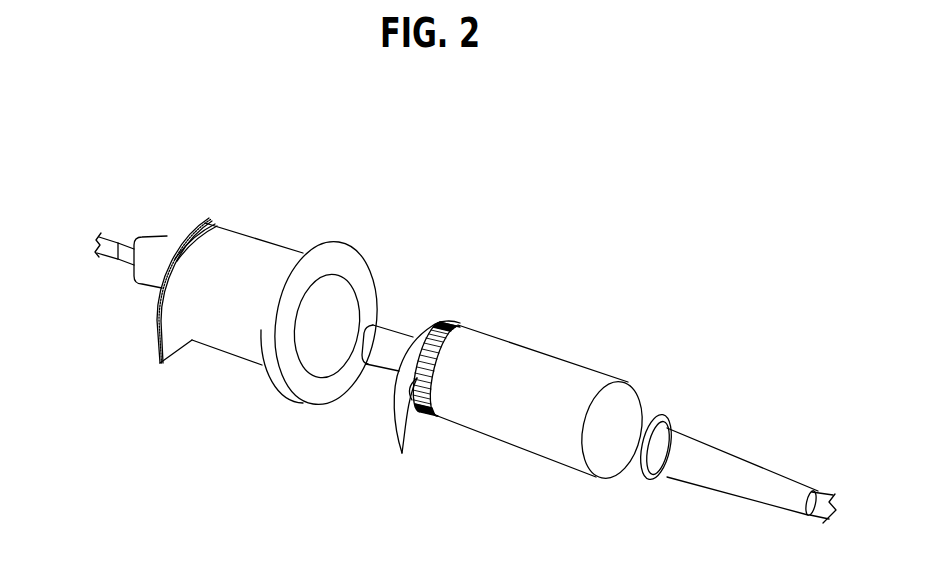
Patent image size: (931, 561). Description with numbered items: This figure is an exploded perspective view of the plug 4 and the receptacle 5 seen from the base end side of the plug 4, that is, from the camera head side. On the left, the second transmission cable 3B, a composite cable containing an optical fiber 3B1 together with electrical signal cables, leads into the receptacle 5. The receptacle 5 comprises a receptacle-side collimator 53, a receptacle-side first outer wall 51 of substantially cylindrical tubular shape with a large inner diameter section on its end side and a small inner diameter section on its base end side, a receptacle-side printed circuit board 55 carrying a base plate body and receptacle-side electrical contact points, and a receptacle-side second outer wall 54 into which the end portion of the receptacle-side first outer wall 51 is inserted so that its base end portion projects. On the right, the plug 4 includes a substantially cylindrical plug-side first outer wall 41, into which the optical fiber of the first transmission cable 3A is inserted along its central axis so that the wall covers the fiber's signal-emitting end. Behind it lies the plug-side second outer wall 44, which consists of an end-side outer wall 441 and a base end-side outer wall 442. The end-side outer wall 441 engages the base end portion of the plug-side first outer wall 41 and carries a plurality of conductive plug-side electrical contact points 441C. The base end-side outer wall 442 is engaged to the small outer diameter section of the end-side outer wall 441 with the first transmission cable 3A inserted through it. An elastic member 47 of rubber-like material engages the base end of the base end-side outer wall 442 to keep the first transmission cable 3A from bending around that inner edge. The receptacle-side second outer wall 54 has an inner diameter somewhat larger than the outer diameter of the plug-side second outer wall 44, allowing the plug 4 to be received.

The second transmission cable 3B is at (107, 237).
The optical fiber 3B1 is at (126, 254).
The receptacle 5 is at (130, 144).
The receptacle-side collimator 53 is at (131, 247).
The receptacle-side first outer wall 51 is at (162, 246).
The receptacle-side printed circuit board 55 is at (202, 223).
The receptacle-side second outer wall 54 is at (248, 241).
The plug 4 is at (613, 231).
The plug-side first outer wall 41 is at (400, 336).
The plug-side second outer wall 44 is at (497, 266).
The end-side outer wall 441 is at (462, 327).
The plug-side electrical contact points 441C is at (408, 400).
The base end-side outer wall 442 is at (542, 347).
The elastic member 47 is at (692, 445).
The first transmission cable 3A is at (822, 497).